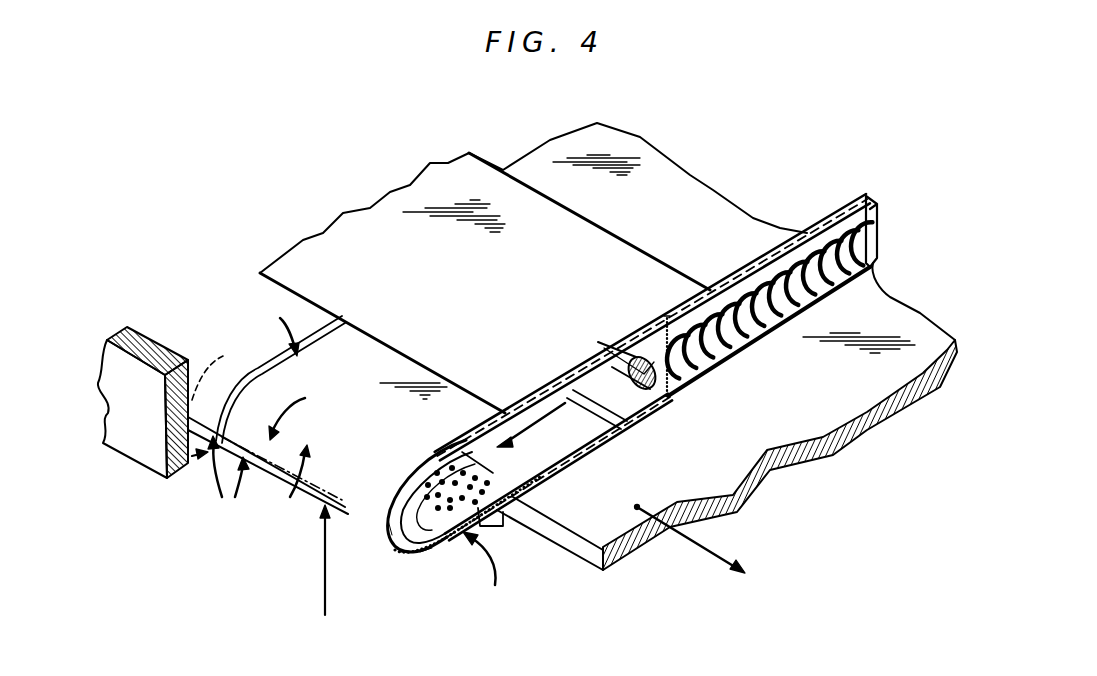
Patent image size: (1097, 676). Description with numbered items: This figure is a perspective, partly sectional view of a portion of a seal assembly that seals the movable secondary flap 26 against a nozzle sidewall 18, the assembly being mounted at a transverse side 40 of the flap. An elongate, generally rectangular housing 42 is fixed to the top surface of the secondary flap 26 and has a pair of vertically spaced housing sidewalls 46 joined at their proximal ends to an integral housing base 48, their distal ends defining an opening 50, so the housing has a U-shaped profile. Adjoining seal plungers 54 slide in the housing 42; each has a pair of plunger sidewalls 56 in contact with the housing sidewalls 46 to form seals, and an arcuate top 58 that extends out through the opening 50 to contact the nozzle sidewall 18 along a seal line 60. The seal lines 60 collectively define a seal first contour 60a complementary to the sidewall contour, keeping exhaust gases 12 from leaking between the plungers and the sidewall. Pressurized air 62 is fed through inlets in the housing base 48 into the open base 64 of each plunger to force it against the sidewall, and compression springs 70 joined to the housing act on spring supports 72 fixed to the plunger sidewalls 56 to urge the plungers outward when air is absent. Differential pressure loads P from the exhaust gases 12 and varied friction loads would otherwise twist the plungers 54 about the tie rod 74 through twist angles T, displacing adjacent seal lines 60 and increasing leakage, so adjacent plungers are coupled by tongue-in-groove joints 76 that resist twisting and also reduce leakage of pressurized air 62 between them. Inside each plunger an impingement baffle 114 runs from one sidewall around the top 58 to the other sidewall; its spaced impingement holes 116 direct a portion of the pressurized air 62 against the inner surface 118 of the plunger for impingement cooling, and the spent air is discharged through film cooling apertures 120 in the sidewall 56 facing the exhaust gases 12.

The exhaust gases 12 is at (204, 468).
The nozzle sidewall 18 is at (162, 340).
The secondary flap 26 is at (784, 470).
The transverse side 40 is at (569, 550).
The housing 42 is at (492, 166).
The housing sidewalls 46 is at (661, 270).
The housing base 48 is at (715, 370).
The opening 50 is at (426, 367).
The seal plungers 54 is at (228, 494).
The plunger sidewalls 56 is at (546, 392).
The top 58 is at (386, 543).
The seal line 60 is at (218, 397).
The seal first contour 60a is at (304, 410).
The pressurized air 62 is at (526, 406).
The open base 64 is at (672, 400).
The compression springs 70 is at (880, 242).
The spring supports 72 is at (660, 348).
The tie rod 74 is at (603, 353).
The tongue-in-groove joints 76 is at (280, 371).
The impingement baffle 114 is at (428, 555).
The impingement holes 116 is at (498, 470).
The inner surface 118 is at (410, 558).
The film cooling apertures 120 is at (486, 573).
The differential pressure loads P is at (328, 619).
The twist angles T is at (283, 512).